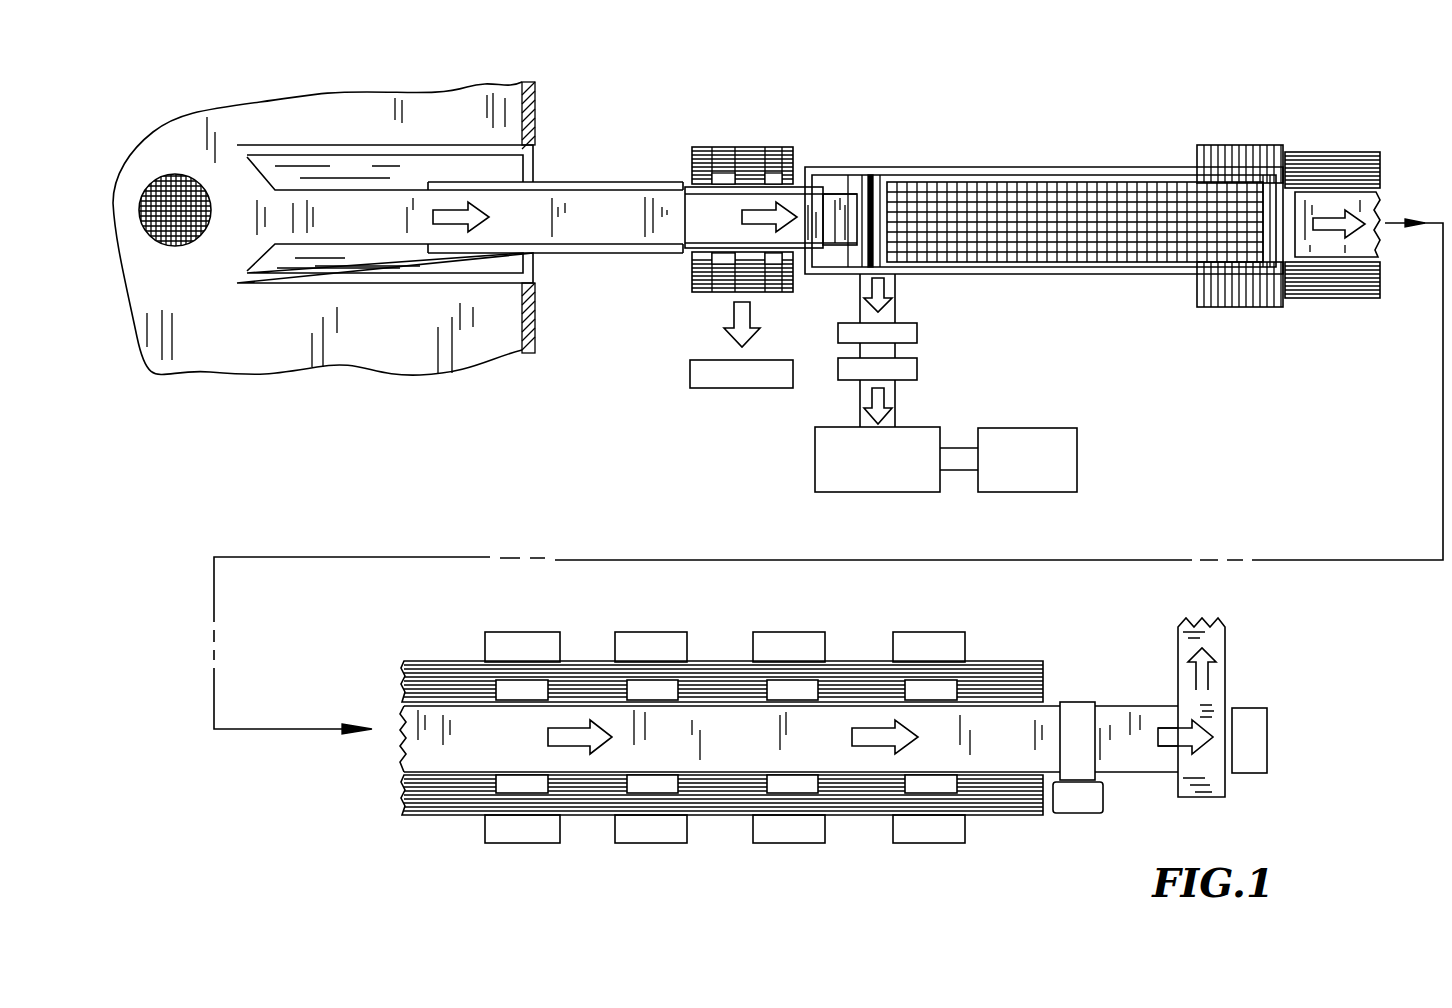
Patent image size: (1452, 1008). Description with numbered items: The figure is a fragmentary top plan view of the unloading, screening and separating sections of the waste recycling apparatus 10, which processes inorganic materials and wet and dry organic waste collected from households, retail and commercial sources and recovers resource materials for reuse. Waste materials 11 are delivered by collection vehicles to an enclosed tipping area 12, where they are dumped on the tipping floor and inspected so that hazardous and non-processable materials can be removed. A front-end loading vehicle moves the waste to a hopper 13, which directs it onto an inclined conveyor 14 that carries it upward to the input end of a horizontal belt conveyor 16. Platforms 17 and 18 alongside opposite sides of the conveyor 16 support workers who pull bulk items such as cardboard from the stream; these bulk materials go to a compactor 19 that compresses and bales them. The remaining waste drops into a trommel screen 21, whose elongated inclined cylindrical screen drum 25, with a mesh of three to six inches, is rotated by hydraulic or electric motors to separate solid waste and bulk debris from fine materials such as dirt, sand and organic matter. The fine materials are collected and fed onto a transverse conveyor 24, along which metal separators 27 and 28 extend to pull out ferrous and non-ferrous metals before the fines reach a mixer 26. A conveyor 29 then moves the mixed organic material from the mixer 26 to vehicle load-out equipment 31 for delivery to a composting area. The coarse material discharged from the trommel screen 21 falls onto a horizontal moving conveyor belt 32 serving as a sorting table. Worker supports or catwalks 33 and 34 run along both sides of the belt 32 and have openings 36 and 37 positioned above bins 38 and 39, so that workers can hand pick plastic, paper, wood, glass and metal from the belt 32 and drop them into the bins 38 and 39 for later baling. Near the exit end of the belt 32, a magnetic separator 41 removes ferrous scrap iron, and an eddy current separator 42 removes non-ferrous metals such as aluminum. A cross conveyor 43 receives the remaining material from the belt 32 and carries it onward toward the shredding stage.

The waste recycling apparatus 10 is at (1061, 152).
The waste materials 11 is at (168, 175).
The tipping area 12 is at (280, 355).
The hopper 13 is at (361, 165).
The inclined conveyor 14 is at (600, 205).
The horizontal conveyor 16 is at (706, 226).
The platform 17 is at (731, 160).
The platform 18 is at (712, 290).
The compactor 19 is at (718, 380).
The trommel screen 21 is at (996, 162).
The transverse conveyor 24 is at (897, 303).
The screen drum 25 is at (1142, 195).
The mixer 26 is at (830, 461).
The metal separator 27 is at (918, 336).
The metal separator 28 is at (918, 372).
The conveyor 29 is at (960, 470).
The vehicle load-out equipment 31 is at (1072, 467).
The conveyor belt 32 is at (1368, 245).
The catwalk 33 is at (1340, 160).
The catwalk 34 is at (1326, 296).
The opening 36 is at (642, 690).
The opening 37 is at (665, 790).
The bin 38 is at (668, 642).
The bin 39 is at (628, 830).
The magnetic separator 41 is at (1073, 815).
The eddy current separator 42 is at (1262, 735).
The cross conveyor 43 is at (1222, 640).